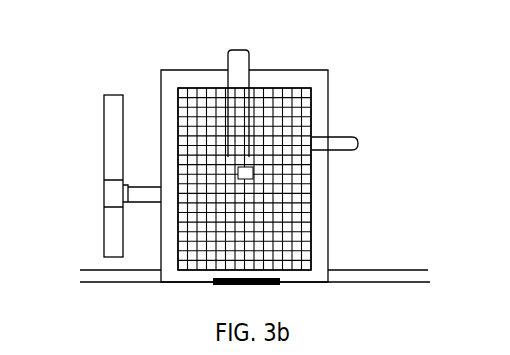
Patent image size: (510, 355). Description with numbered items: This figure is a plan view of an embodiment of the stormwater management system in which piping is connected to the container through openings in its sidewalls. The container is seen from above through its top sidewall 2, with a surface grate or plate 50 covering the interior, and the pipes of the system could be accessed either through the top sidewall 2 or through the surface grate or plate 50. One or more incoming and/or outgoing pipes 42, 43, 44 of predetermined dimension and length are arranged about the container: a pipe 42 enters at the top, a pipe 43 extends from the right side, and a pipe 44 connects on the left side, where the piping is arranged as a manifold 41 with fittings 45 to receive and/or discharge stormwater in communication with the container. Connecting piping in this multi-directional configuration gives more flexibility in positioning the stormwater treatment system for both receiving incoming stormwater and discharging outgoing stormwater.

The top sidewall 2 is at (336, 200).
The manifold 41 is at (106, 127).
The incoming and/or outgoing pipe 42 is at (230, 47).
The incoming and/or outgoing pipe 43 is at (368, 143).
The incoming and/or outgoing pipe 44 is at (145, 180).
The fittings 45 is at (104, 194).
The surface grate or plate 50 is at (288, 235).